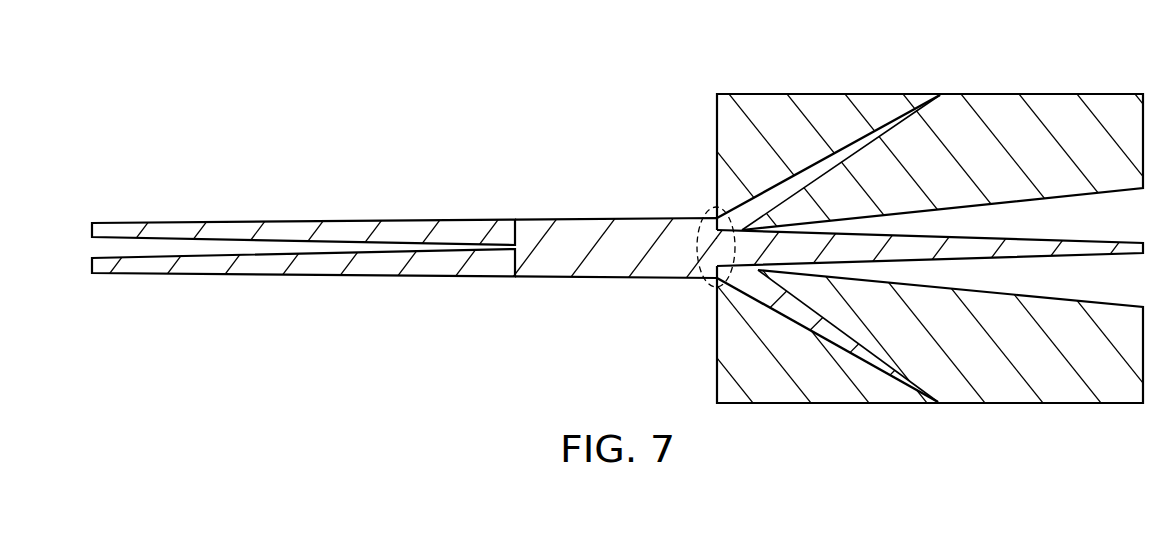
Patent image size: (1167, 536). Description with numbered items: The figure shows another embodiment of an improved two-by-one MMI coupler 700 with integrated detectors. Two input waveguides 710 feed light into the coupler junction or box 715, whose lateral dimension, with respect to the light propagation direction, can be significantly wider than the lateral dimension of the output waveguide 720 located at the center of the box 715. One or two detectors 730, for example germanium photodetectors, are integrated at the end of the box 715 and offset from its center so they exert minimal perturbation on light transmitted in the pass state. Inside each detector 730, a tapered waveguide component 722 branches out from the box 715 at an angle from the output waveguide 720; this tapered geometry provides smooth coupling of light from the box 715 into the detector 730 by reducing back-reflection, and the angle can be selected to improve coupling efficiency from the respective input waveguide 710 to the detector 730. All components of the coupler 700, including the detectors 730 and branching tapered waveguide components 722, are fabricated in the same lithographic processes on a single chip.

The 2×1 MMI coupler 700 is at (240, 71).
The input waveguide 710 is at (302, 232).
The coupler junction or box 715 is at (698, 232).
The output waveguide 720 is at (1040, 245).
The tapered waveguide component 722 is at (862, 140).
The detector 730 is at (1002, 105).